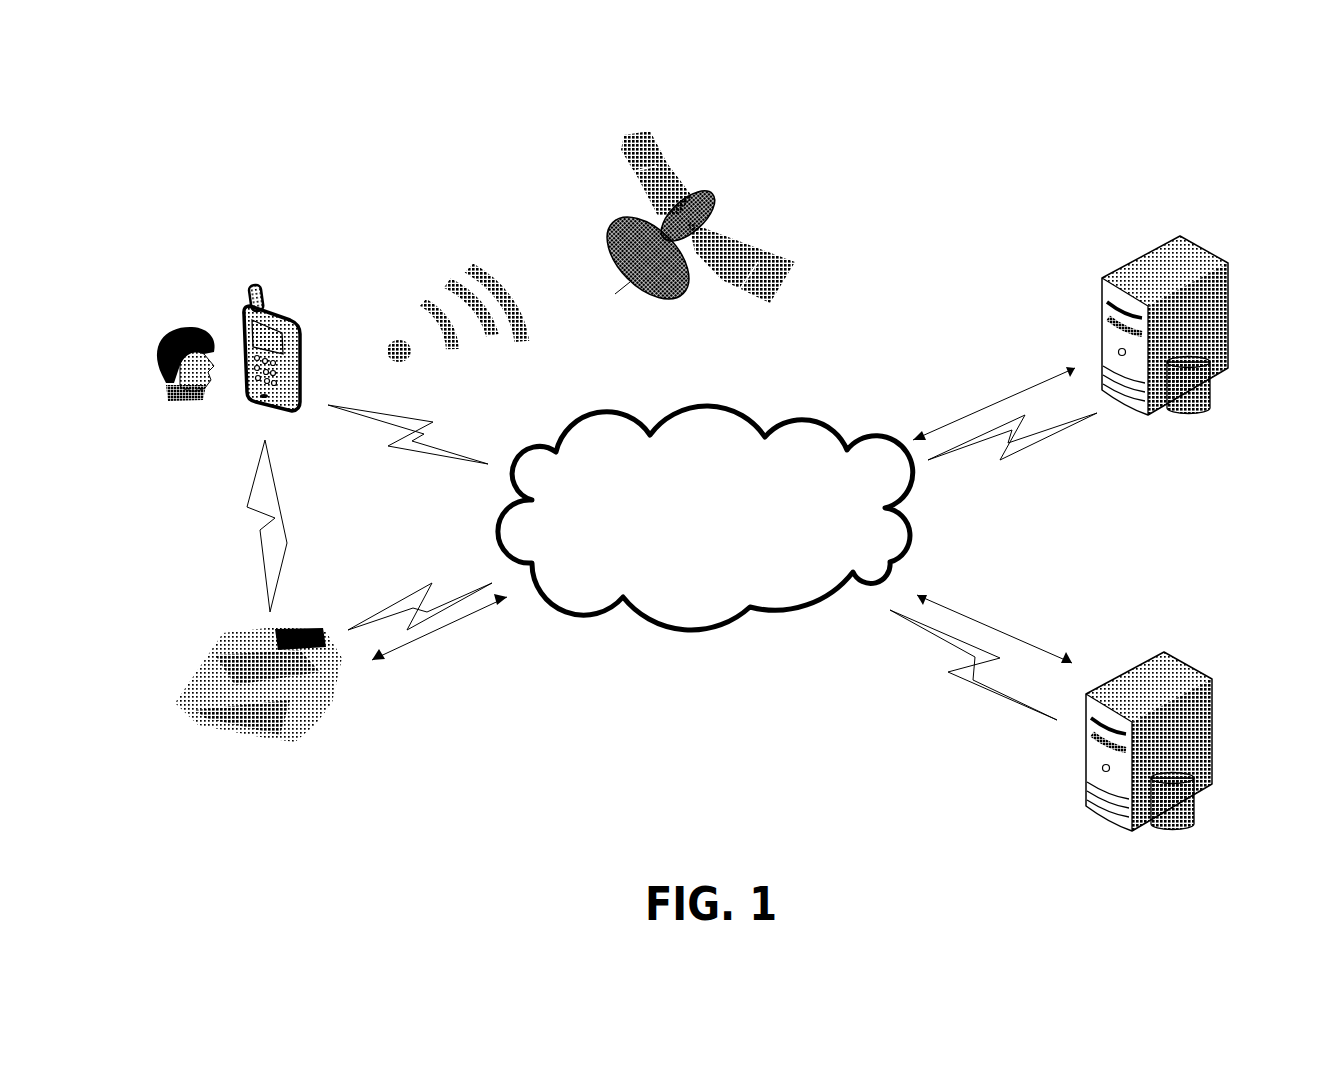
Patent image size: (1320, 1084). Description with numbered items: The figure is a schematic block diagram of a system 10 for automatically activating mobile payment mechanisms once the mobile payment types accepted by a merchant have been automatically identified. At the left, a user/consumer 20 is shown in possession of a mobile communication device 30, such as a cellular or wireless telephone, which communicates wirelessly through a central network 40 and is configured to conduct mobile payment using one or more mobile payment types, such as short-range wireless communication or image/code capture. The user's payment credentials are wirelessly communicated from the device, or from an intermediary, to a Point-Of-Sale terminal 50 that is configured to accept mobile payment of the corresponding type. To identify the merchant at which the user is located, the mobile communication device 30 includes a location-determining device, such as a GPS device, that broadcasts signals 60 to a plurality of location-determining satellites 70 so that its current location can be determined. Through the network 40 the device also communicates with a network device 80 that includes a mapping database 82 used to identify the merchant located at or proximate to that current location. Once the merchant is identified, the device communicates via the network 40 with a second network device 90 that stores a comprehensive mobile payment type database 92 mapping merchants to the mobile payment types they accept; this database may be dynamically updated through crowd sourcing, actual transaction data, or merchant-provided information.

The system 10 is at (850, 142).
The user/consumer 20 is at (187, 328).
The mobile communication device 30 is at (272, 348).
The network 40 is at (766, 529).
The Point-Of-Sale (POS) terminal 50 is at (250, 632).
The signals 60 is at (418, 312).
The location-determining satellites 70 is at (640, 213).
The network device 80 is at (1172, 310).
The mapping database 82 is at (1205, 362).
The network device 90 is at (1198, 660).
The mobile payment type database 92 is at (1170, 790).